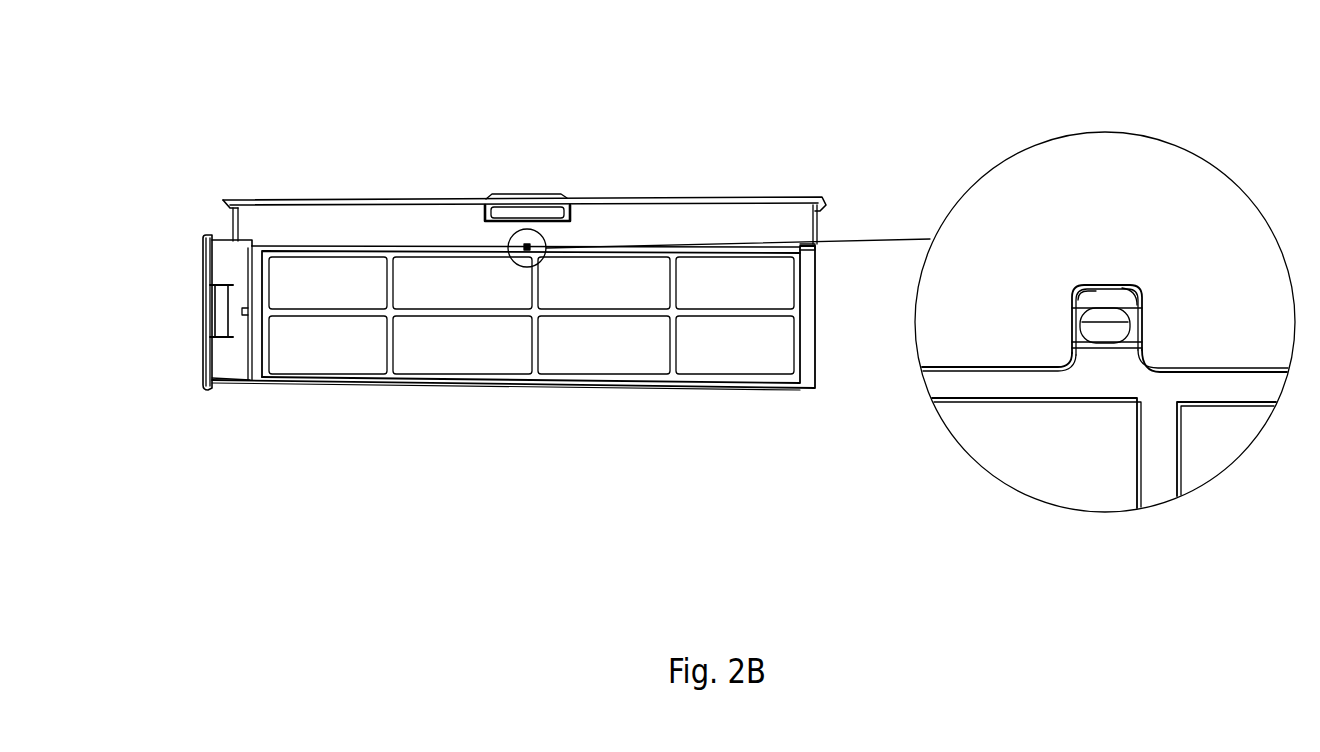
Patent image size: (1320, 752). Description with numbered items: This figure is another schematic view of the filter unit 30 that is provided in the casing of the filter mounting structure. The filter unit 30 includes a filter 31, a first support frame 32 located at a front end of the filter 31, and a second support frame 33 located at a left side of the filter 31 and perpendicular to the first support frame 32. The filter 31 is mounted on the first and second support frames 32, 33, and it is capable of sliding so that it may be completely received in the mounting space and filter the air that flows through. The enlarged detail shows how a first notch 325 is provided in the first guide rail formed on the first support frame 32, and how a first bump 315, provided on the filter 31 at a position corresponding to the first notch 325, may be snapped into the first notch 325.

The filter unit 30 is at (328, 197).
The filter 31 is at (642, 355).
The first support frame 32 is at (653, 225).
The second support frame 33 is at (232, 358).
The first bump 315 is at (1107, 325).
The first notch 325 is at (1082, 361).